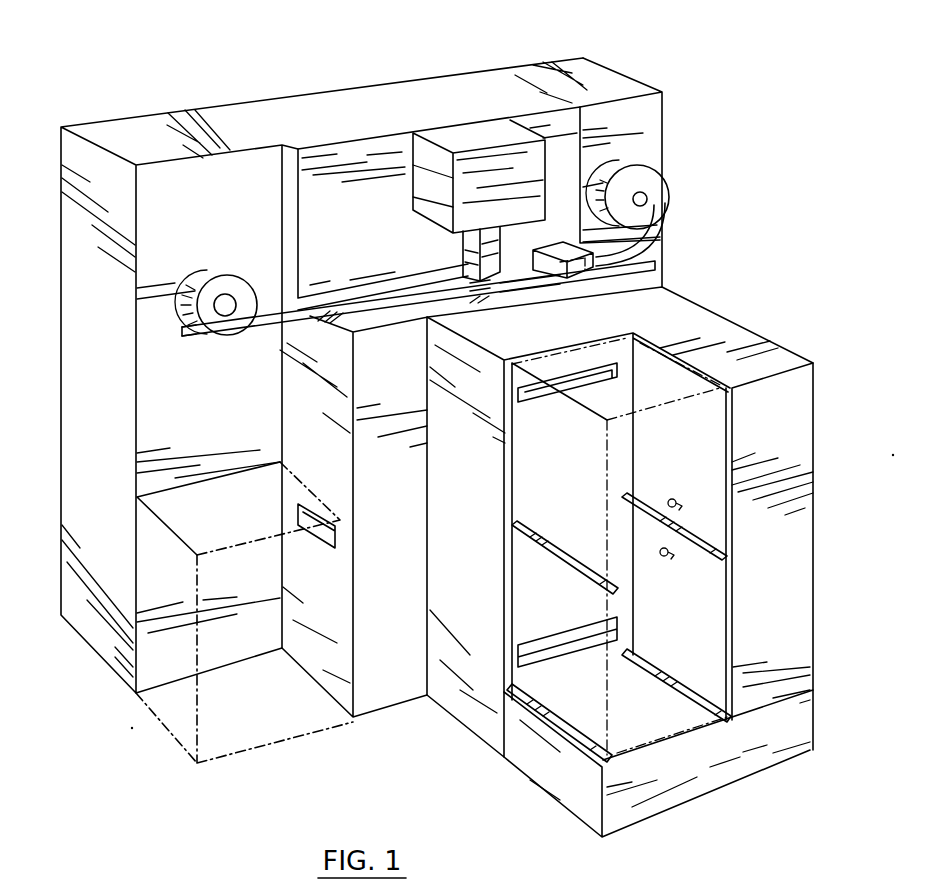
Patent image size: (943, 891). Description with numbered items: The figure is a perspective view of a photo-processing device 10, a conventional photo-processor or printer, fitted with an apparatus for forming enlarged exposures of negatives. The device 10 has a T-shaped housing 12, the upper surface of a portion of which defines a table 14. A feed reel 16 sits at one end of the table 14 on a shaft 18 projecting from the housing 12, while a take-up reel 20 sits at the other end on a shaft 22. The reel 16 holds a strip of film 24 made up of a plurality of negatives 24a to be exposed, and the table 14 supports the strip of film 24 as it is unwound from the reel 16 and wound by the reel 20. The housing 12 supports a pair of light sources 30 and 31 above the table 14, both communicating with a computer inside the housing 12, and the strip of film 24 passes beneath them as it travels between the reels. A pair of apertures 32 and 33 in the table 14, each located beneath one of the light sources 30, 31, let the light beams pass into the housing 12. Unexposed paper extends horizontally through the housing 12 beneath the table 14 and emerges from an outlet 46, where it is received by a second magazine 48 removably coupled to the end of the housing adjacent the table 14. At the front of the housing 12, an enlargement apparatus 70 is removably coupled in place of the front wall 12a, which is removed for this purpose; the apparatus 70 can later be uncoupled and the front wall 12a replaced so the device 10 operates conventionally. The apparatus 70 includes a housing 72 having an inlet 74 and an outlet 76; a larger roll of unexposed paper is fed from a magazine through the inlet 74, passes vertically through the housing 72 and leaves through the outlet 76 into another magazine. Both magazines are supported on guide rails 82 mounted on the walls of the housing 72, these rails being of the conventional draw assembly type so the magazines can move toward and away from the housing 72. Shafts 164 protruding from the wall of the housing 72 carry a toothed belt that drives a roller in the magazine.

The photo-processing device 10 is at (167, 97).
The housing 12 is at (651, 80).
The front wall 12a is at (398, 690).
The table 14 is at (327, 297).
The feed reel 16 is at (652, 180).
The shaft 18 is at (647, 199).
The take-up reel 20 is at (243, 277).
The shaft 22 is at (192, 331).
The strip of film 24 is at (263, 334).
The negatives 24a is at (493, 281).
The light source 30 is at (637, 257).
The light source 31 is at (463, 259).
The aperture 32 is at (582, 262).
The aperture 33 is at (482, 287).
The outlet 46 is at (345, 541).
The second magazine 48 is at (279, 712).
The enlargement apparatus 70 is at (502, 772).
The housing 72 is at (708, 770).
The inlet 74 is at (600, 375).
The outlet 76 is at (557, 645).
The guide rails 82 is at (563, 557).
The shafts 164 is at (665, 550).